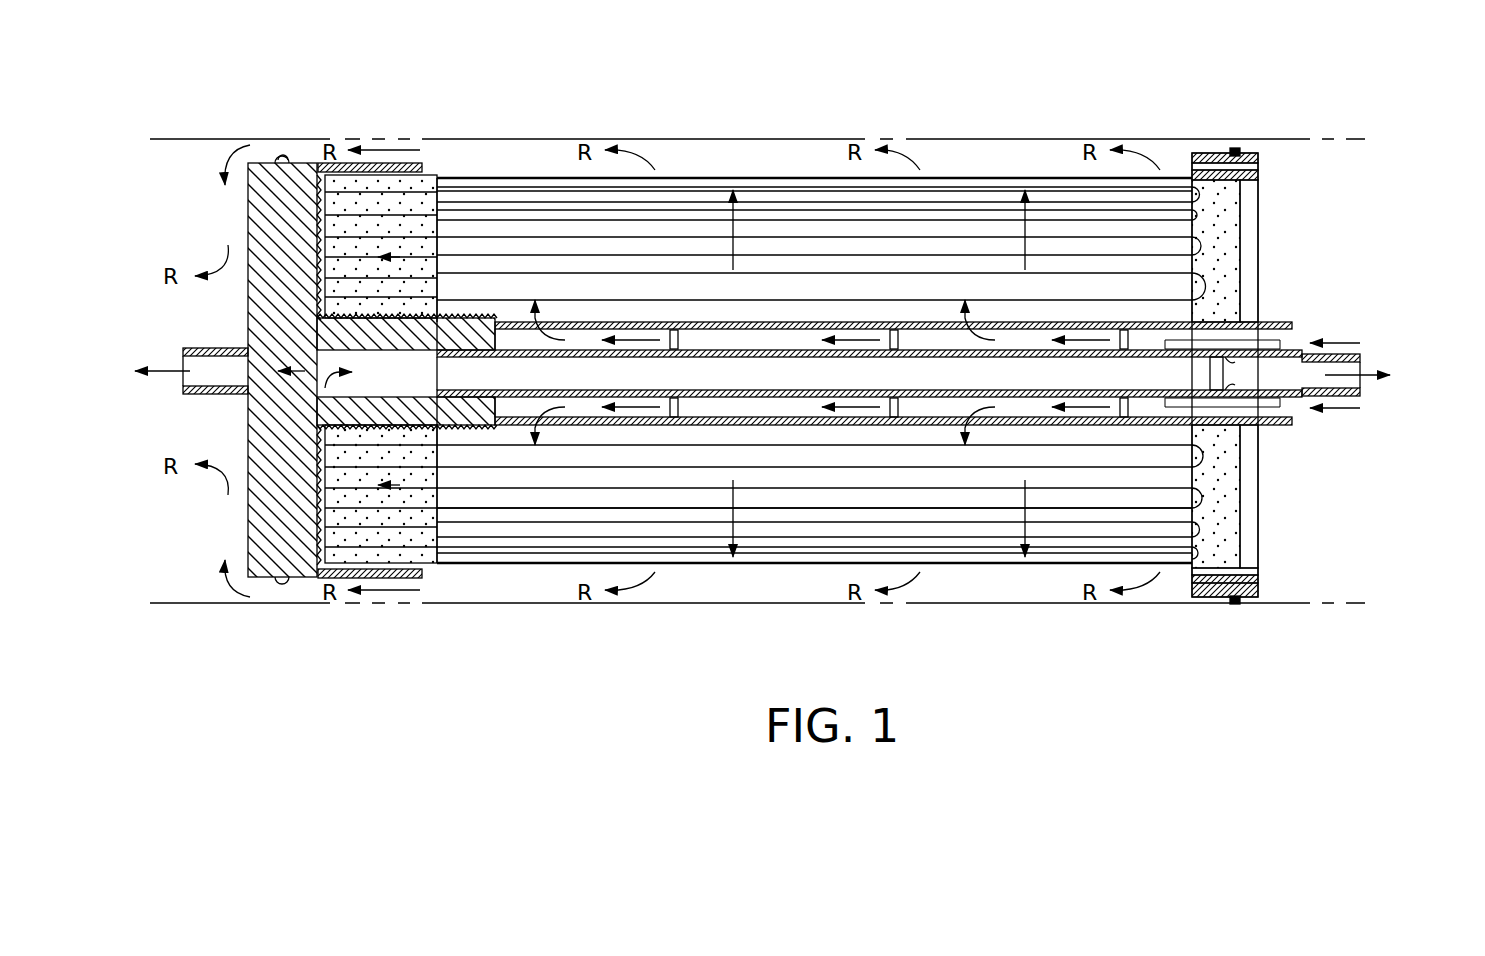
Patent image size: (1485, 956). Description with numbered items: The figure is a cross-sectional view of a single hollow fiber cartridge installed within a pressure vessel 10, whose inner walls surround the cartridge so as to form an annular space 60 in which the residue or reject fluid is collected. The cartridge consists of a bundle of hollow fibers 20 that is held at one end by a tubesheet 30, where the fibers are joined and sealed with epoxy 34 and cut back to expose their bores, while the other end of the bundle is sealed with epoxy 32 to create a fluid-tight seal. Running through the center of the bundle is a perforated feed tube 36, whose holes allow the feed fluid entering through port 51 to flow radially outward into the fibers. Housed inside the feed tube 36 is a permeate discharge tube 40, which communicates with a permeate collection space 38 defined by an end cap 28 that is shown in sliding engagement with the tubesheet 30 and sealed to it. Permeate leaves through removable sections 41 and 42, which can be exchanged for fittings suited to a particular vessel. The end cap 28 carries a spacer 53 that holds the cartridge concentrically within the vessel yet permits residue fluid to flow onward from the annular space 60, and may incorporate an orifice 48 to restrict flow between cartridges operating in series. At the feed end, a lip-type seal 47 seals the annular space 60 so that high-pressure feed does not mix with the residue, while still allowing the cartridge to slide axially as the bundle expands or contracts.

The pressure vessel 10 is at (745, 139).
The hollow fibers 20 is at (1100, 530).
The end cap 28 is at (275, 222).
The tubesheet 30 is at (437, 540).
The epoxy 32 is at (1220, 520).
The epoxy 34 is at (365, 518).
The feed tube 36 is at (800, 425).
The permeate collection space 38 is at (290, 318).
The permeate discharge tube 40 is at (1015, 400).
The section 41 is at (183, 395).
The section 42 is at (1347, 370).
The seal 47 is at (1237, 150).
The orifice 48 is at (1250, 178).
The port 51 is at (1352, 343).
The spacer 53 is at (282, 150).
The annular space 60 is at (995, 172).